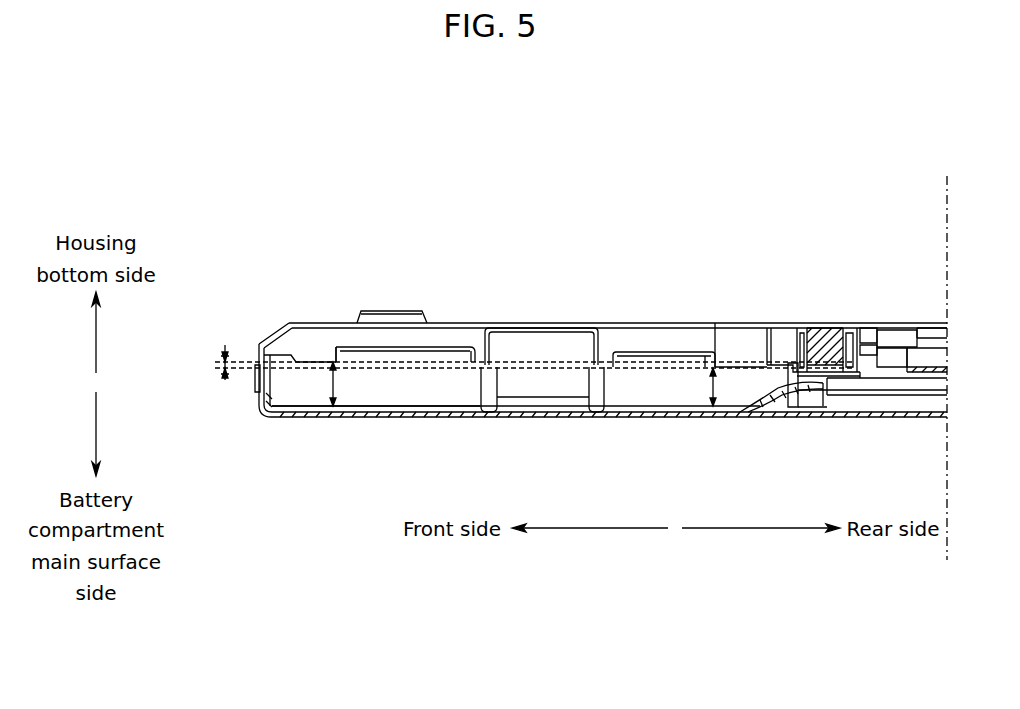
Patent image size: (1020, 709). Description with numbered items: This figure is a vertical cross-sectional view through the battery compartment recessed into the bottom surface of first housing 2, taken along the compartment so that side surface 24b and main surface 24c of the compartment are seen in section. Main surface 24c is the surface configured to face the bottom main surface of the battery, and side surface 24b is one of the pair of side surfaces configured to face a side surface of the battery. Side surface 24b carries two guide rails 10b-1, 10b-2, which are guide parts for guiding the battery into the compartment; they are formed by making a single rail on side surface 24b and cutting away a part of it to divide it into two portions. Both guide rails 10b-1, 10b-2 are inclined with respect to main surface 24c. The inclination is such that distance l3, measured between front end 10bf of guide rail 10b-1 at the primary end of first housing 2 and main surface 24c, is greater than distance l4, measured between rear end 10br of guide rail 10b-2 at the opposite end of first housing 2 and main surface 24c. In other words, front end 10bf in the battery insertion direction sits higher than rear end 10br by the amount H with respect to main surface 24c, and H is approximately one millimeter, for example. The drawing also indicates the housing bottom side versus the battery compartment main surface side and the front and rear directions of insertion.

The first housing 2 is at (708, 327).
The front end of guide rail 10b-1 10bf is at (334, 360).
The rear end of guide rail 10b-2 10br is at (722, 355).
The guide rail 10b-1 is at (362, 360).
The guide rail 10b-2 is at (633, 360).
The side surface of battery compartment 24b is at (445, 333).
The main surface of battery compartment 24c is at (333, 400).
The height difference H is at (225, 380).
The distance l3 is at (343, 398).
The distance l4 is at (703, 395).